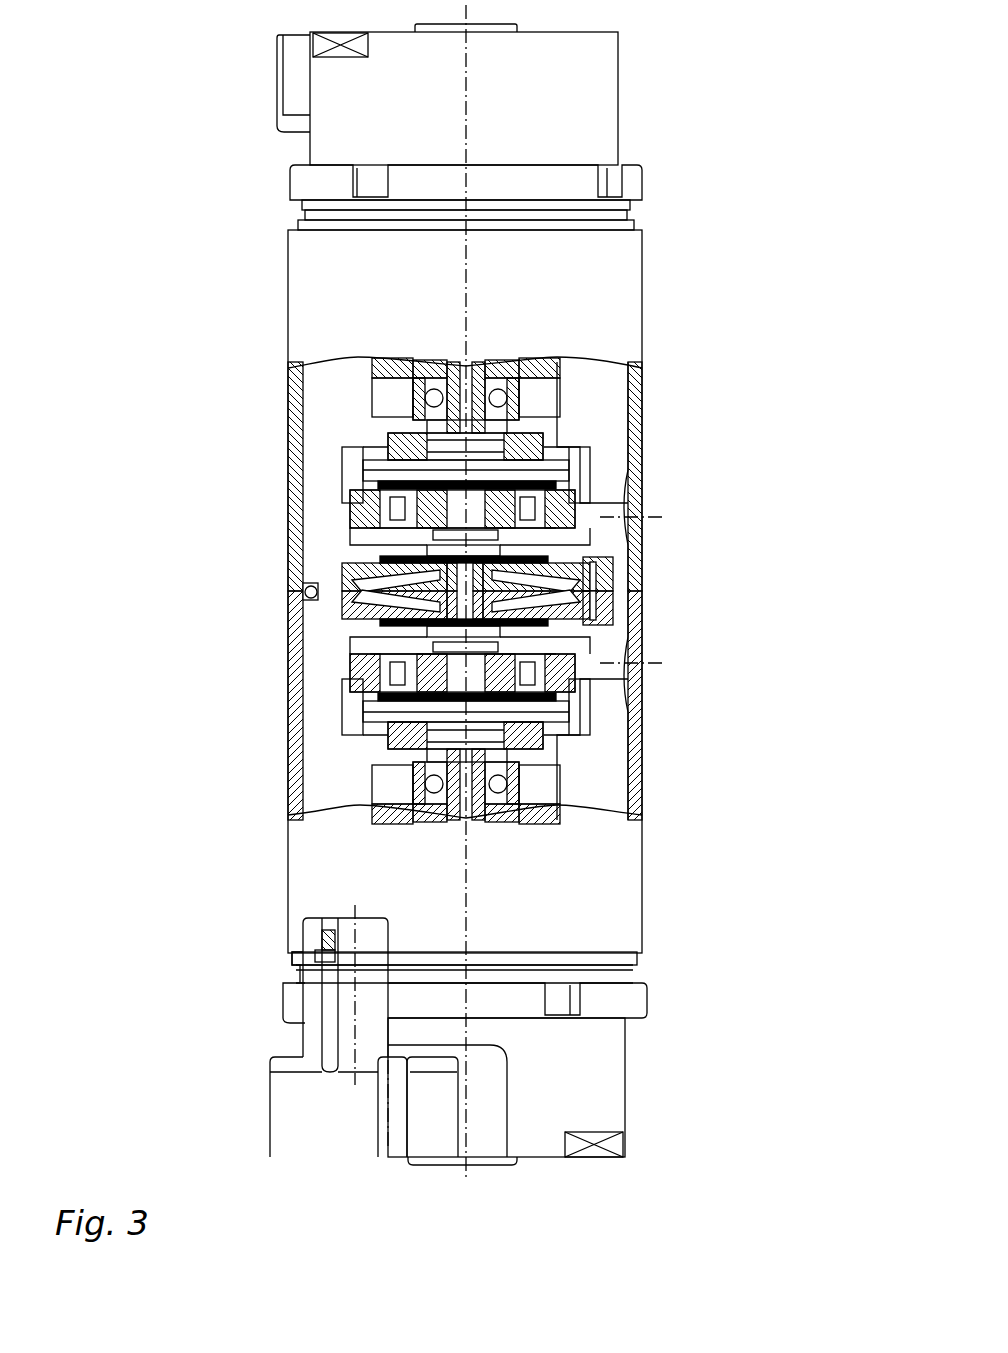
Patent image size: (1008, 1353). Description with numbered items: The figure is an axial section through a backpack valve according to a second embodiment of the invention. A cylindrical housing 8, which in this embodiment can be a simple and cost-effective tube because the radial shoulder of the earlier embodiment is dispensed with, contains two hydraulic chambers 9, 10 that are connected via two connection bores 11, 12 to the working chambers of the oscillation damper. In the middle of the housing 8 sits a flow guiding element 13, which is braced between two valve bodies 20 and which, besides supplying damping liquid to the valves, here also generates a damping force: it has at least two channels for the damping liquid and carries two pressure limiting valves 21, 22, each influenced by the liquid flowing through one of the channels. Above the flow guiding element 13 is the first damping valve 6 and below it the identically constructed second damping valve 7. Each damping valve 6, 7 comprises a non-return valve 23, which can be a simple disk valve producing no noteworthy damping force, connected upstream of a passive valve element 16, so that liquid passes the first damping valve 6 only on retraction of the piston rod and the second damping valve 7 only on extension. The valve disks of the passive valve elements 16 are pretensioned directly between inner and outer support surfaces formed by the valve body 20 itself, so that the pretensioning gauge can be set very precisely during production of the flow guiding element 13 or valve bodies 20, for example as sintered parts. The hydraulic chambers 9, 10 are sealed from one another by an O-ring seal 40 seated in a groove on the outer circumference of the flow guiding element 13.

The first damping valve 6 is at (330, 398).
The second damping valve 7 is at (337, 782).
The housing 8 is at (293, 466).
The hydraulic chamber 9 is at (612, 788).
The hydraulic chamber 10 is at (610, 408).
The connection bore 11 is at (635, 635).
The connection bore 12 is at (635, 492).
The flow guiding element 13 is at (605, 567).
The passive valve element 16 is at (575, 490).
The valve body 20 is at (565, 500).
The pressure limiting valve 21 is at (372, 557).
The pressure limiting valve 22 is at (372, 627).
The non-return valve 23 is at (587, 537).
The O-ring seal 40 is at (303, 596).